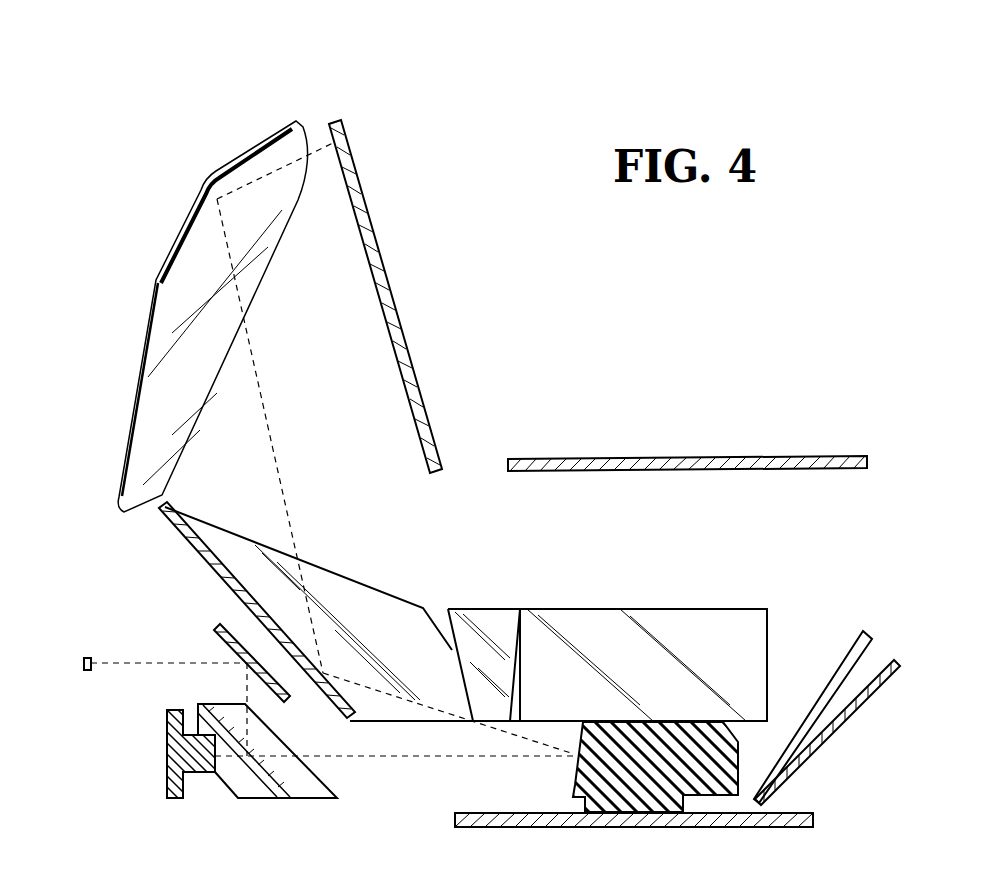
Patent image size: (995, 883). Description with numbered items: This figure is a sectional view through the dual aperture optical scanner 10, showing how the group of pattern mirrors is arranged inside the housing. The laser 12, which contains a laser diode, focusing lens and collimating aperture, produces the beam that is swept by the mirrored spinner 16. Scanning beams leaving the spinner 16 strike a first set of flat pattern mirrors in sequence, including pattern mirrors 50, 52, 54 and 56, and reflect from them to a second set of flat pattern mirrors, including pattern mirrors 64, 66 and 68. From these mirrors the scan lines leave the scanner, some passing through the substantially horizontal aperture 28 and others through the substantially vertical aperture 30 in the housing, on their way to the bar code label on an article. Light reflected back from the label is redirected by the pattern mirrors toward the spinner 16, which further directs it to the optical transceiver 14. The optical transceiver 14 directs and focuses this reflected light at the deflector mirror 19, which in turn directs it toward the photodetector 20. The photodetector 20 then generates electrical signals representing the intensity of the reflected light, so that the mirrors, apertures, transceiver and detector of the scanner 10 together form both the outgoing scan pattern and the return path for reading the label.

The dual aperture optical scanner 10 is at (480, 80).
The laser 12 is at (183, 800).
The optical transceiver 14 is at (263, 800).
The mirrored spinner 16 is at (562, 787).
The deflector mirror 19 is at (215, 625).
The photodetector 20 is at (88, 657).
The horizontal aperture 28 is at (870, 459).
The vertical aperture 30 is at (333, 120).
The pattern mirror 50 is at (700, 628).
The pattern mirror 52 is at (496, 608).
The pattern mirror 54 is at (378, 598).
The pattern mirror 56 is at (204, 543).
The pattern mirror 64 is at (873, 632).
The pattern mirror 66 is at (897, 658).
The pattern mirror 68 is at (186, 250).